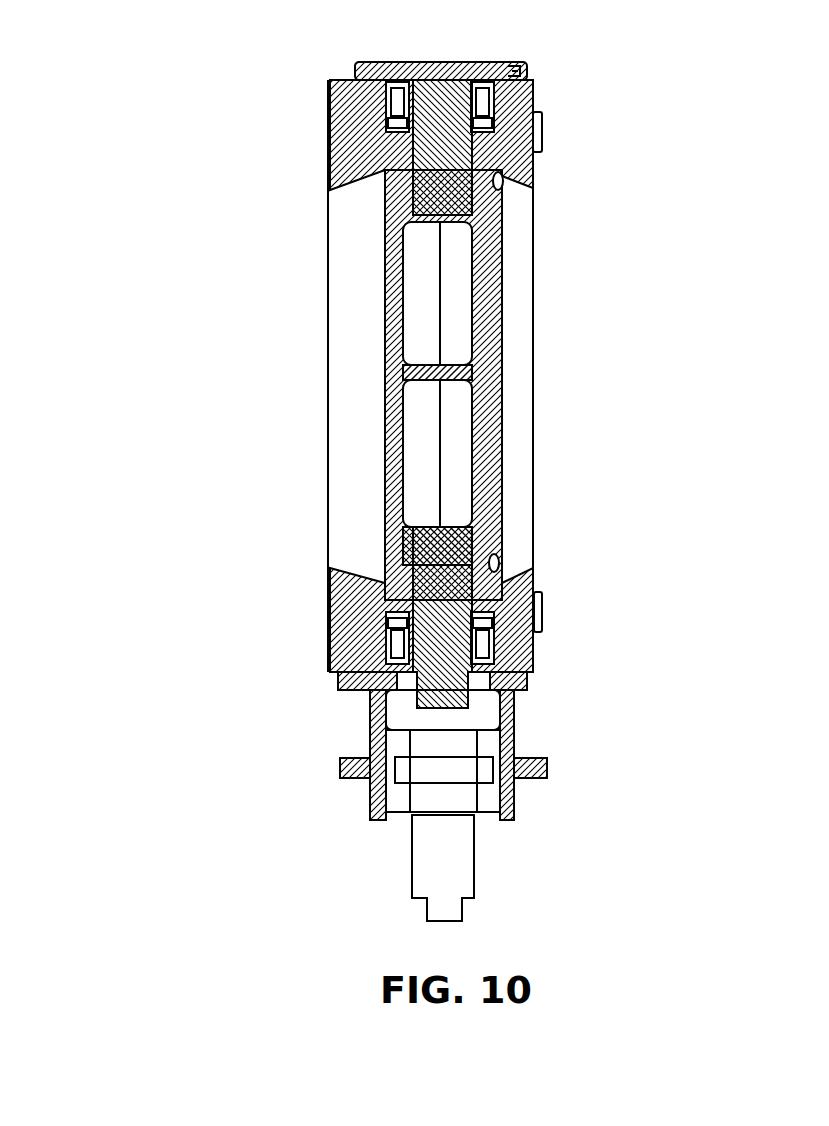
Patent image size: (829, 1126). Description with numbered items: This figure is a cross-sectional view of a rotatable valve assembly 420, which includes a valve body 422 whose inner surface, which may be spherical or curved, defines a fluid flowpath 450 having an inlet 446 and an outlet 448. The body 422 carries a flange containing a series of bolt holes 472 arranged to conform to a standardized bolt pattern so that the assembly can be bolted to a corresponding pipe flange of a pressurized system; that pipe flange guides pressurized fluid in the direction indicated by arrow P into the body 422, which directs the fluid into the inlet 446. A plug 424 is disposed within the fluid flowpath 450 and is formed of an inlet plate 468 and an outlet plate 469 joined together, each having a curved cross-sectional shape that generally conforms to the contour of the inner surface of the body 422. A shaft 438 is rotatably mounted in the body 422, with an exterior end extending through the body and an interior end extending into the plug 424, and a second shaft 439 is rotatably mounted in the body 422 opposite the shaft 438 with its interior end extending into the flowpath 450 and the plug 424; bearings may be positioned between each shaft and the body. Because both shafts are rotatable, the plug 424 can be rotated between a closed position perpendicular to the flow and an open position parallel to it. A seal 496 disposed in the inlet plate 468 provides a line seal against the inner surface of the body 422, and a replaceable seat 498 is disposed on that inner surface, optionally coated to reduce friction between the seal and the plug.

The rotatable valve assembly 420 is at (301, 200).
The valve body 422 is at (342, 118).
The plug 424 is at (477, 392).
The shaft 438 is at (513, 697).
The second shaft 439 is at (465, 140).
The inlet 446 is at (522, 253).
The outlet 448 is at (346, 255).
The fluid flowpath 450 is at (297, 444).
The inlet plate 468 is at (527, 547).
The outlet plate 469 is at (385, 490).
The bolt holes 472 is at (418, 297).
The seal 496 is at (505, 182).
The replaceable seat 498 is at (537, 161).
The arrow P is at (592, 340).